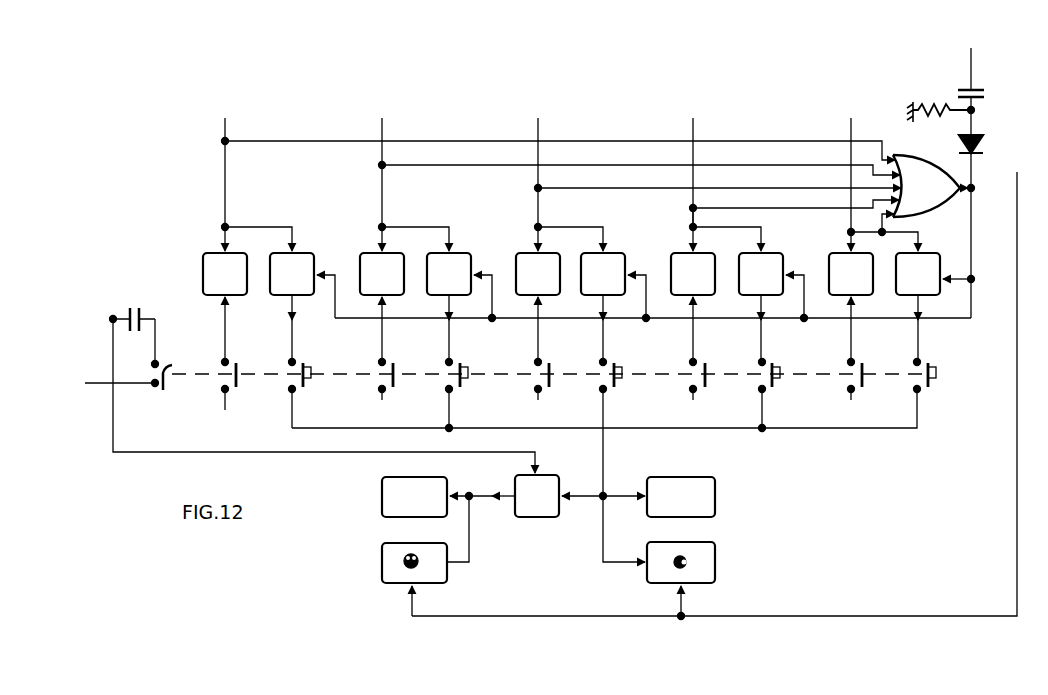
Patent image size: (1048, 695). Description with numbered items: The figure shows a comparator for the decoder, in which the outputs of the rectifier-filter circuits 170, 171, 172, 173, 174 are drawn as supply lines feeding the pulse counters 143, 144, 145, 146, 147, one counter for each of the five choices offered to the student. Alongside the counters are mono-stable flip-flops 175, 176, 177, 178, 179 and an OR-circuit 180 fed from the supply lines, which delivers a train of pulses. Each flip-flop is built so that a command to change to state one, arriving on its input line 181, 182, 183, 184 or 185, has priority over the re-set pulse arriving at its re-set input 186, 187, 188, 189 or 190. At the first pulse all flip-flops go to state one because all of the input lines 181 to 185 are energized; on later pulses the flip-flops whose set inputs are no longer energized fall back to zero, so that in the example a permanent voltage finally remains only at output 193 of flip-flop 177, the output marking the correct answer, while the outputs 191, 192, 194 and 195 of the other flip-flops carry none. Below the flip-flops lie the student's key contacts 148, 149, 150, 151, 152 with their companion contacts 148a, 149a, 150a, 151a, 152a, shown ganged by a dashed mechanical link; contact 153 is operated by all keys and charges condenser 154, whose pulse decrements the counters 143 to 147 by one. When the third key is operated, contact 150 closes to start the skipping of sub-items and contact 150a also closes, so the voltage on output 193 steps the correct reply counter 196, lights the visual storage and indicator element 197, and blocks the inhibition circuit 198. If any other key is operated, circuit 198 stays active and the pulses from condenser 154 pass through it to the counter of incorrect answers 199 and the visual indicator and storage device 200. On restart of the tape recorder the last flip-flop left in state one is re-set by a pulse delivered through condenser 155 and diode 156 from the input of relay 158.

The pulse counter 143 is at (208, 256).
The pulse counter 144 is at (370, 262).
The pulse counter 145 is at (526, 262).
The pulse counter 146 is at (676, 262).
The pulse counter 147 is at (834, 266).
The switch contact 148 is at (246, 396).
The auxiliary switch contact 148a is at (312, 396).
The switch contact 149 is at (400, 396).
The auxiliary switch contact 149a is at (466, 396).
The key contact 150 is at (546, 396).
The contact 150a is at (620, 396).
The switch contact 151 is at (708, 396).
The auxiliary switch contact 151a is at (780, 396).
The switch contact 152 is at (862, 396).
The auxiliary switch contact 152a is at (928, 400).
The contact 153 is at (168, 366).
The condenser 154 is at (138, 307).
The condenser 155 is at (976, 90).
The diode 156 is at (977, 142).
The relay 158 is at (992, 61).
The rectifier-filter circuit 170 is at (559, 160).
The rectifier-filter circuit 171 is at (640, 160).
The rectifier-filter circuit 172 is at (718, 160).
The rectifier-filter circuit 173 is at (795, 160).
The rectifier-filter circuit 174 is at (871, 166).
The mono-stable flip-flop 175 is at (268, 262).
The mono-stable flip-flop 176 is at (426, 262).
The mono-stable flip-flop 177 is at (580, 262).
The mono-stable flip-flop 178 is at (737, 262).
The mono-stable flip-flop 179 is at (892, 268).
The OR-circuit 180 is at (912, 163).
The input line 181 is at (297, 251).
The input line 182 is at (454, 251).
The input line 183 is at (609, 251).
The input line 184 is at (770, 251).
The input line 185 is at (921, 252).
The re-set input 186 is at (330, 285).
The re-set input 187 is at (486, 290).
The re-set input 188 is at (638, 290).
The re-set input 189 is at (798, 290).
The re-set input 190 is at (944, 290).
The output line 191 is at (286, 312).
The output line 192 is at (444, 306).
The output terminal 193 is at (598, 310).
The output line 194 is at (752, 308).
The output line 195 is at (910, 310).
The correct reply counter 196 is at (702, 488).
The visual storage and indicator element 197 is at (706, 554).
The inhibition circuit 198 is at (554, 490).
The counter of incorrect answers 199 is at (436, 490).
The visual indicator and storage device 200 is at (396, 550).